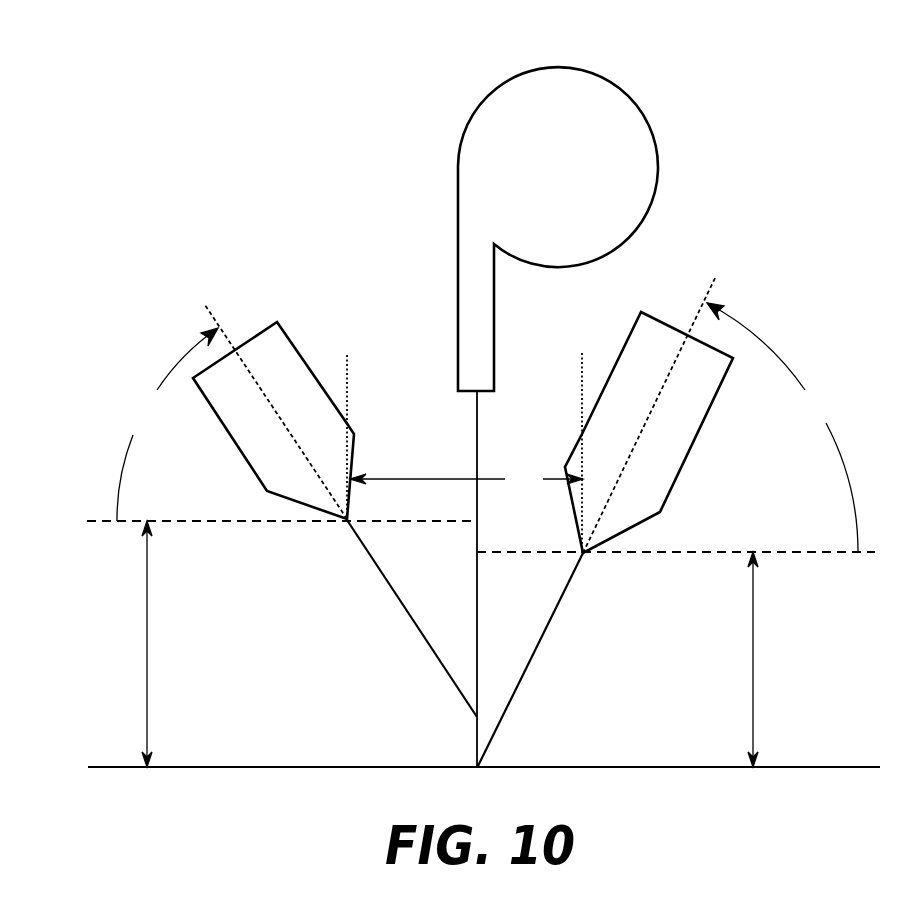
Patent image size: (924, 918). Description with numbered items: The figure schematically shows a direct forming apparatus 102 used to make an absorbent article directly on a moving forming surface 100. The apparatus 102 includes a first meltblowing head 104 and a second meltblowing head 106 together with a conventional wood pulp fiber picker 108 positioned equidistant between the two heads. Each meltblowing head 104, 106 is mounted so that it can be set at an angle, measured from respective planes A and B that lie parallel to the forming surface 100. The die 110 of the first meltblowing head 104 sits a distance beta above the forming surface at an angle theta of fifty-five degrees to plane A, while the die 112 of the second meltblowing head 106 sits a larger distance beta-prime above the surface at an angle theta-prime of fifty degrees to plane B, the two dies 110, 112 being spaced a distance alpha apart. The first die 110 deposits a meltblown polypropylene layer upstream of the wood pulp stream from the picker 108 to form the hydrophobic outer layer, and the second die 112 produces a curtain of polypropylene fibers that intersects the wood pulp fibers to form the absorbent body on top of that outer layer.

The forming surface 100 is at (673, 768).
The direct forming apparatus 102 is at (772, 218).
The first meltblowing head 104 is at (620, 356).
The second meltblowing head 106 is at (277, 322).
The wood pulp fiber picker 108 is at (623, 117).
The die of the first meltblowing head 110 is at (583, 553).
The die of the second meltblowing head 112 is at (347, 522).